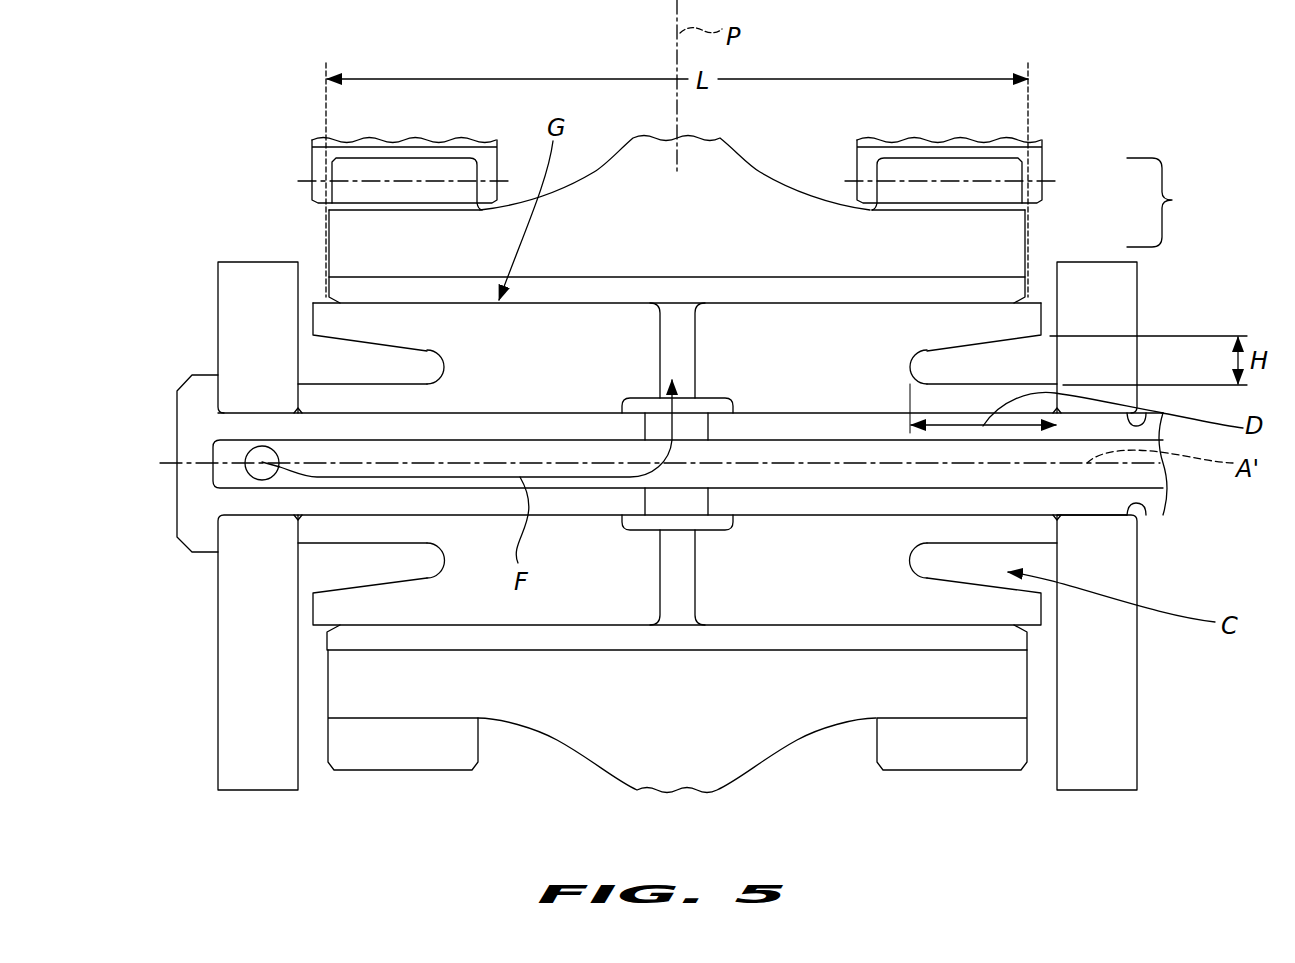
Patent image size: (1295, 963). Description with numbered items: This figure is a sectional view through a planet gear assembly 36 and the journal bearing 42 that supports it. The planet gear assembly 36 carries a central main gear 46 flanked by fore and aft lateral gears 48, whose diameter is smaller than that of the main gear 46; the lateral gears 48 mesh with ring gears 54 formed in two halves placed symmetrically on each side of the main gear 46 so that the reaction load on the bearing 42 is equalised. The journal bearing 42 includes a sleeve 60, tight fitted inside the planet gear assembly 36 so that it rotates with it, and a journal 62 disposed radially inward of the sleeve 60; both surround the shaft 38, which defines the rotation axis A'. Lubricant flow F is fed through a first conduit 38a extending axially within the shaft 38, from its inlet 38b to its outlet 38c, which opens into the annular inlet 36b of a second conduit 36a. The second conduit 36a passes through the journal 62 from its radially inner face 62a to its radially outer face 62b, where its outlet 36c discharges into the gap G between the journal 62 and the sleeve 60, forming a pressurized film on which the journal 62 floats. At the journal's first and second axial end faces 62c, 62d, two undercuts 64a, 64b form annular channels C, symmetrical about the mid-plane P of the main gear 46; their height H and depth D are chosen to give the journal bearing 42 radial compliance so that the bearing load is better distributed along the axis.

The planet gear assembly 36 is at (910, 240).
The second conduit 36a is at (695, 352).
The inlet of the second conduit 36b is at (727, 419).
The outlet of the second conduit 36c is at (694, 300).
The shaft 38 is at (1153, 498).
The first conduit 38a is at (385, 471).
The inlet of the first conduit 38b is at (262, 462).
The outlet of the first conduit 38c is at (696, 424).
The journal bearing 42 is at (1173, 202).
The main gear 46 is at (675, 752).
The lateral gears 48 is at (400, 170).
The ring gears 54 is at (312, 158).
The sleeve 60 is at (908, 290).
The journal 62 is at (970, 302).
The radially inner face of the journal 62a is at (509, 400).
The radially outer face of the journal 62b is at (622, 314).
The first axial end face of the journal 62c is at (313, 320).
The second axial end face of the journal 62d is at (1044, 321).
The first undercut 64a is at (376, 379).
The second undercut 64b is at (1024, 379).